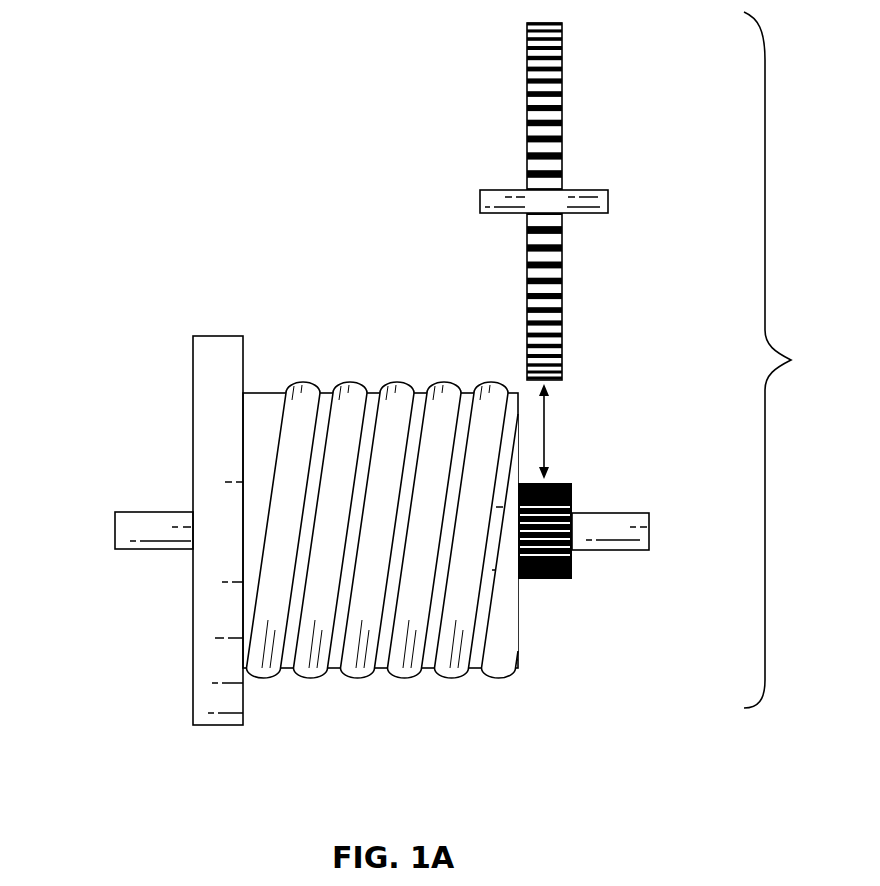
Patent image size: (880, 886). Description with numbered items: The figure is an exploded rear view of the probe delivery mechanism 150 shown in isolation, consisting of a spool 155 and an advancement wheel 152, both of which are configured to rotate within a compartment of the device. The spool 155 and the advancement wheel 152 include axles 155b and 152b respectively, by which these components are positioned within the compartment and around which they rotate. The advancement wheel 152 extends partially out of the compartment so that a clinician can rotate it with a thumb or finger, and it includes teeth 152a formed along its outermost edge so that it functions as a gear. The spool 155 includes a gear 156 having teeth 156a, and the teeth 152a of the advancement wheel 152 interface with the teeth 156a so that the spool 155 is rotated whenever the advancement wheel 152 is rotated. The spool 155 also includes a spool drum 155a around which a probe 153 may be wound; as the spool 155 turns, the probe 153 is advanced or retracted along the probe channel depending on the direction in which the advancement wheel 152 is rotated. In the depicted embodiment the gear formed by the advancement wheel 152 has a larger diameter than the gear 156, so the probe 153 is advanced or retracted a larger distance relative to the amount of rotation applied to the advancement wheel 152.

The probe delivery mechanism 150 is at (795, 360).
The advancement wheel 152 is at (554, 202).
The teeth 152a is at (527, 66).
The axle 152b is at (480, 205).
The probe 153 is at (455, 680).
The spool 155 is at (385, 563).
The spool drum 155a is at (510, 638).
The axle 155b is at (115, 525).
The gear 156 is at (582, 565).
The teeth 156a is at (545, 580).